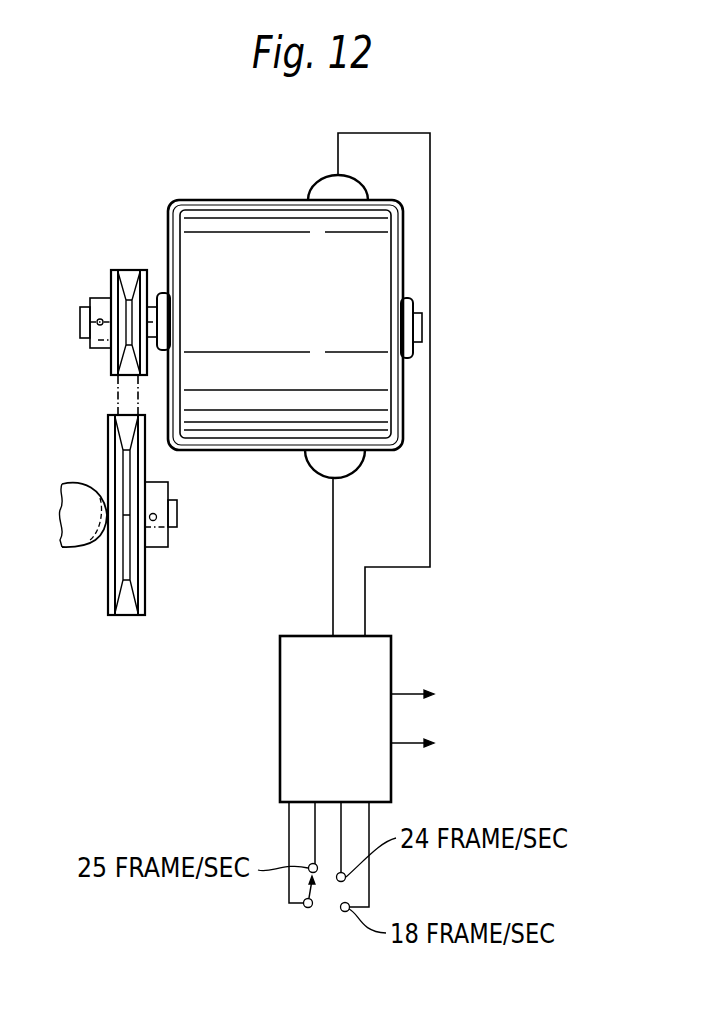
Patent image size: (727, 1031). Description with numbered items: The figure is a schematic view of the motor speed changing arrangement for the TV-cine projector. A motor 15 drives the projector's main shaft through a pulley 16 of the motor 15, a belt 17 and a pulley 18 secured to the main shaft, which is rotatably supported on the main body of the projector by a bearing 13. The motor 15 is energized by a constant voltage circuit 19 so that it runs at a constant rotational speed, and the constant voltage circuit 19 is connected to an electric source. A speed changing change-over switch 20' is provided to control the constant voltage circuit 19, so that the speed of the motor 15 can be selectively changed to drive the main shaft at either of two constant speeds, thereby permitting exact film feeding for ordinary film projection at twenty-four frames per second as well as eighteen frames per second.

The bearing 13 is at (80, 545).
The motor 15 is at (236, 200).
The pulley 16 is at (112, 284).
The belt 17 is at (112, 390).
The pulley 18 is at (146, 577).
The constant voltage circuit 19 is at (417, 719).
The speed changing change-over switch 20' is at (329, 890).